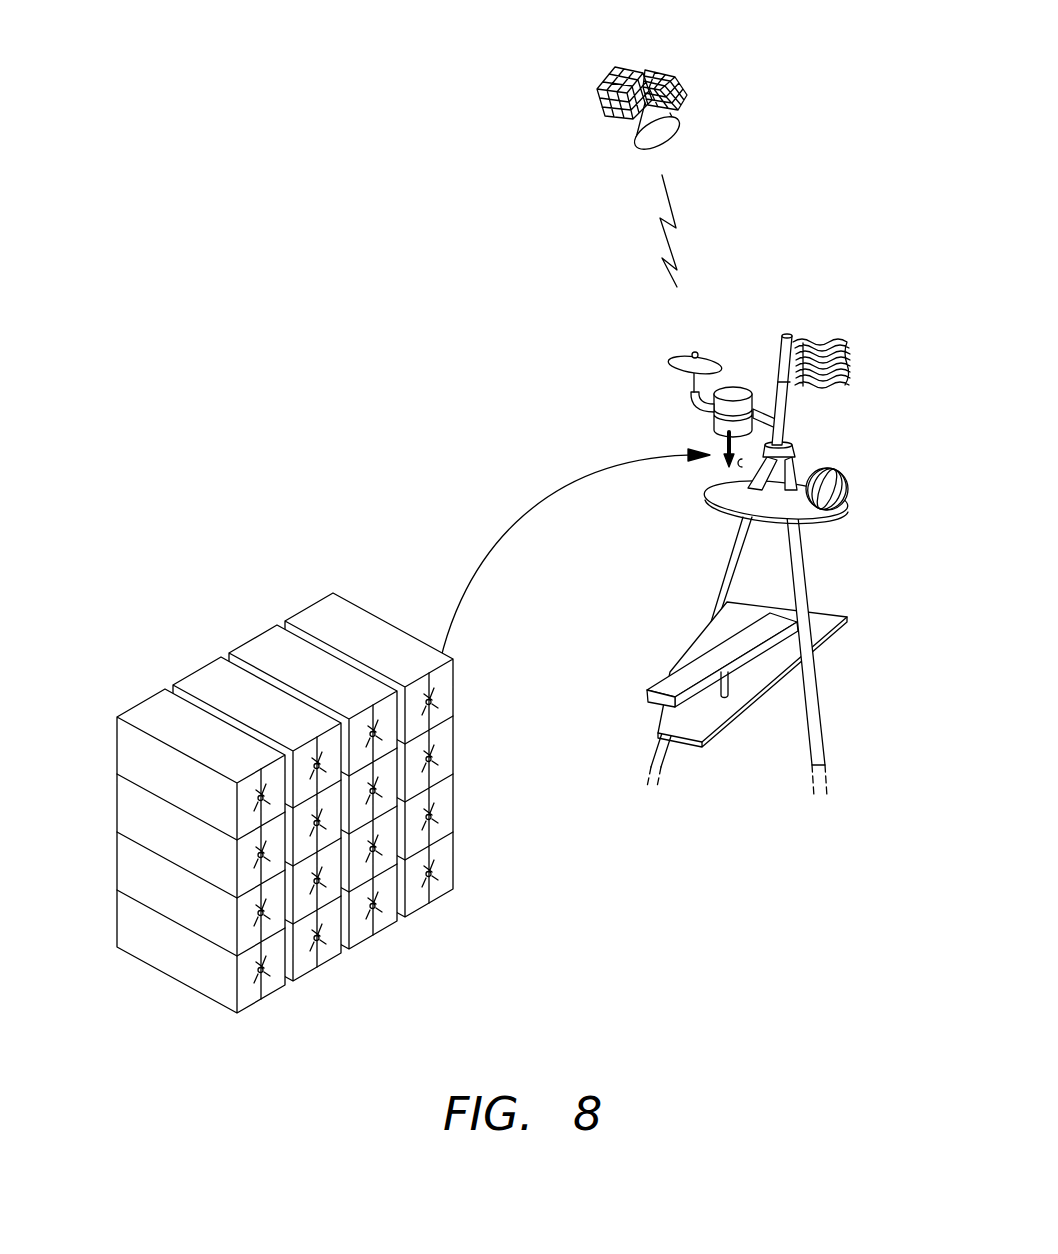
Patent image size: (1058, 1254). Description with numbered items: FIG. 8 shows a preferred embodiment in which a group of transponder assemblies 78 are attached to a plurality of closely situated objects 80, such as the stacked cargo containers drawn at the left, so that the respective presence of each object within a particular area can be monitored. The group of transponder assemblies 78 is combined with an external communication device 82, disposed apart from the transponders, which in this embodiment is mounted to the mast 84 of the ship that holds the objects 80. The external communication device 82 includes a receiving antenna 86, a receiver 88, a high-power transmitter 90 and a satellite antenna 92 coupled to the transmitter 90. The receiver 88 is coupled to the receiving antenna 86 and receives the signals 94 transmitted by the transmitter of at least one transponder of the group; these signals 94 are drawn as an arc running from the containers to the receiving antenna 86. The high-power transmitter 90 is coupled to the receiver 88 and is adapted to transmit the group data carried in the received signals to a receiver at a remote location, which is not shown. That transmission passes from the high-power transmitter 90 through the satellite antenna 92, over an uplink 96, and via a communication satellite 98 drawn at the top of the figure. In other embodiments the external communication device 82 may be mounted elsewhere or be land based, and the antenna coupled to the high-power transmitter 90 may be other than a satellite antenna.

The transponder assemblies 78 is at (259, 913).
The closely situated objects 80 is at (305, 608).
The external communication device 82 is at (577, 367).
The mast 84 is at (805, 428).
The receiving antenna 86 is at (724, 466).
The receiver 88 is at (712, 432).
The high-power transmitter 90 is at (737, 392).
The satellite antenna 92 is at (673, 362).
The signals 94 is at (493, 537).
The uplink 96 is at (657, 232).
The communication satellite 98 is at (675, 77).